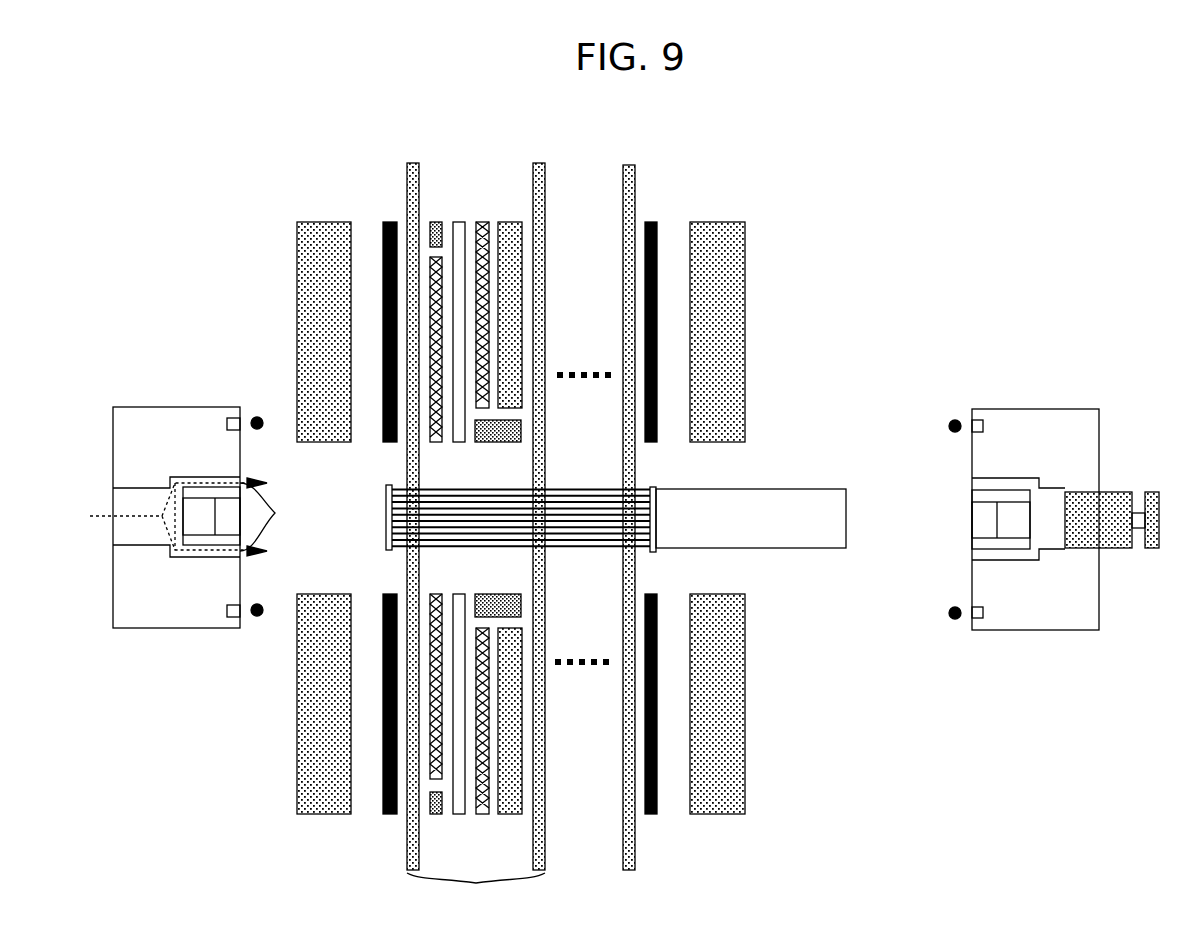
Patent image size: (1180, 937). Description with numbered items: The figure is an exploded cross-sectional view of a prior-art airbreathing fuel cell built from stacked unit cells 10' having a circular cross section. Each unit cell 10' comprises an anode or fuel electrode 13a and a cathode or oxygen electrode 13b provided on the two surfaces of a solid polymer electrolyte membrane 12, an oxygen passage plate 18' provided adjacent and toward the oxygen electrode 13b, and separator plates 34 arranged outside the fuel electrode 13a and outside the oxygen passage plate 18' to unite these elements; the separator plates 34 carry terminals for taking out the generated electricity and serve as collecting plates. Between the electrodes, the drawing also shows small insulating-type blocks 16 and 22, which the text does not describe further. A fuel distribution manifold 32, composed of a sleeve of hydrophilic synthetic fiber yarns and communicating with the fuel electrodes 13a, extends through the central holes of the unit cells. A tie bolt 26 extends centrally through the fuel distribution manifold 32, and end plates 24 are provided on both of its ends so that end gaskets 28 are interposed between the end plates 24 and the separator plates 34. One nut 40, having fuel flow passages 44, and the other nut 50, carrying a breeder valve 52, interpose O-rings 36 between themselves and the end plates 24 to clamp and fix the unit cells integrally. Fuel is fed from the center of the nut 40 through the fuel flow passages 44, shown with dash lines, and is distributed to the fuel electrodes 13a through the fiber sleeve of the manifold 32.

The unit cell 10' is at (476, 894).
The solid polymer electrolyte membrane 12 is at (460, 222).
The anode (fuel electrode) 13a is at (444, 270).
The cathode (oxygen electrode) 13b is at (485, 222).
The insulator 16 is at (435, 222).
The oxygen passage plate 18' is at (546, 469).
The insulator block 22 is at (515, 442).
The end plate 24 is at (315, 222).
The tie bolt 26 is at (815, 502).
The end gasket 28 is at (393, 222).
The fuel distribution manifold 32 is at (640, 487).
The separator plate 34 is at (413, 163).
The O-ring 36 is at (257, 417).
The nut 40 is at (123, 407).
The fuel flow passage 44 is at (200, 517).
The nut 50 is at (1037, 409).
The breeder valve 52 is at (1152, 492).